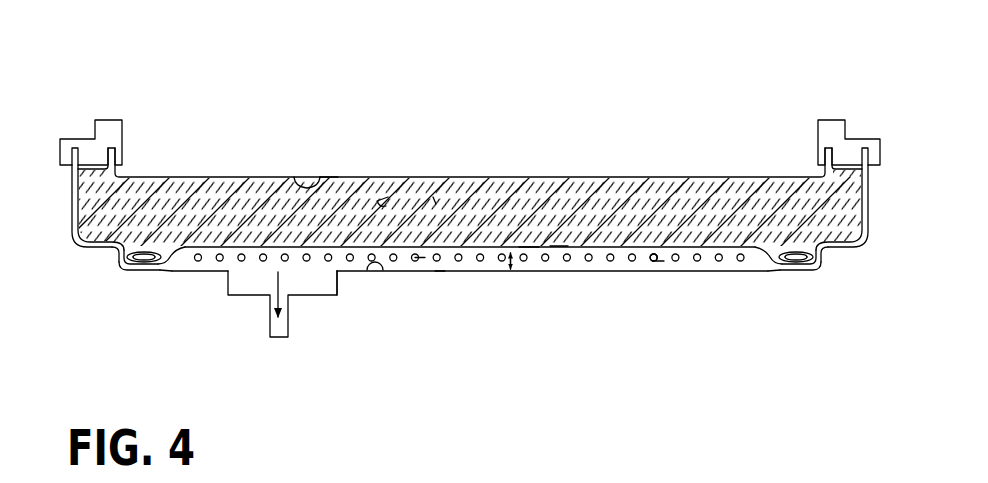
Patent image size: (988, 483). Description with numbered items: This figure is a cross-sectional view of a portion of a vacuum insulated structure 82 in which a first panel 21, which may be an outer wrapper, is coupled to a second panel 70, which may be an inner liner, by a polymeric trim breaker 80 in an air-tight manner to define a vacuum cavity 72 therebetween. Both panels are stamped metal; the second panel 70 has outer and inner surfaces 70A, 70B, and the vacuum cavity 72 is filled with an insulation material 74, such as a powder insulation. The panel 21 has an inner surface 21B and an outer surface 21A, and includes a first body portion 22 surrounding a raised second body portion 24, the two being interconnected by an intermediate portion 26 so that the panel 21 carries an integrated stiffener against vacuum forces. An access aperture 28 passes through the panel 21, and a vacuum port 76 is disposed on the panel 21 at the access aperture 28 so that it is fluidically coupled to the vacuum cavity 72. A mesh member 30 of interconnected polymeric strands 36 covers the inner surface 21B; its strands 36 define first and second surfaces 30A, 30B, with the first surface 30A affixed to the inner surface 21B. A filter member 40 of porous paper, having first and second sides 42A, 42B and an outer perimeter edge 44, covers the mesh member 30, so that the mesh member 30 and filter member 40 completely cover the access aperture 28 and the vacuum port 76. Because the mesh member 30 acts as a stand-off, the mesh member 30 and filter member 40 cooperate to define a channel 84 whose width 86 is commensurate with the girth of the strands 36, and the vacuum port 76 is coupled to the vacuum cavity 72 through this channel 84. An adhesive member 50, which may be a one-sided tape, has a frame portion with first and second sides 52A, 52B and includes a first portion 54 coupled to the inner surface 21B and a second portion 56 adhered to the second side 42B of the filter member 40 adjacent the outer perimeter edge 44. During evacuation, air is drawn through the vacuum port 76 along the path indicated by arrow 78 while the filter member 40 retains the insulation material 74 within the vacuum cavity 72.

The panel 21 is at (490, 290).
The outer surface of the panel 21A is at (440, 273).
The inner surface 21B is at (383, 270).
The first body portion 22 is at (88, 243).
The second body portion 24 is at (160, 268).
The intermediate portion 26 is at (132, 263).
The access aperture 28 is at (323, 273).
The mesh member 30 is at (594, 266).
The first surface of the mesh member 30A is at (653, 260).
The second surface of the mesh member 30B is at (653, 256).
The strands 36 is at (660, 255).
The filter member 40 is at (557, 237).
The first side of the filter member 42A is at (530, 250).
The second side of the filter member 42B is at (524, 247).
The outer perimeter edge 44 is at (152, 267).
The adhesive member 50 is at (145, 245).
The first side of the frame portion 52A is at (147, 267).
The second side of the frame portion 52B is at (132, 247).
The first portion 54 is at (118, 260).
The second portion 56 is at (168, 252).
The second panel 70 is at (278, 168).
The outer surface of the second panel 70A is at (294, 176).
The inner surface of the second panel 70B is at (320, 176).
The vacuum cavity 72 is at (388, 197).
The insulation material 74 is at (433, 197).
The vacuum port 76 is at (262, 310).
The arrow 78 is at (288, 297).
The trim breaker 80 is at (80, 125).
The vacuum insulated structure 82 is at (136, 86).
The channel 84 is at (420, 258).
The width 86 is at (524, 258).